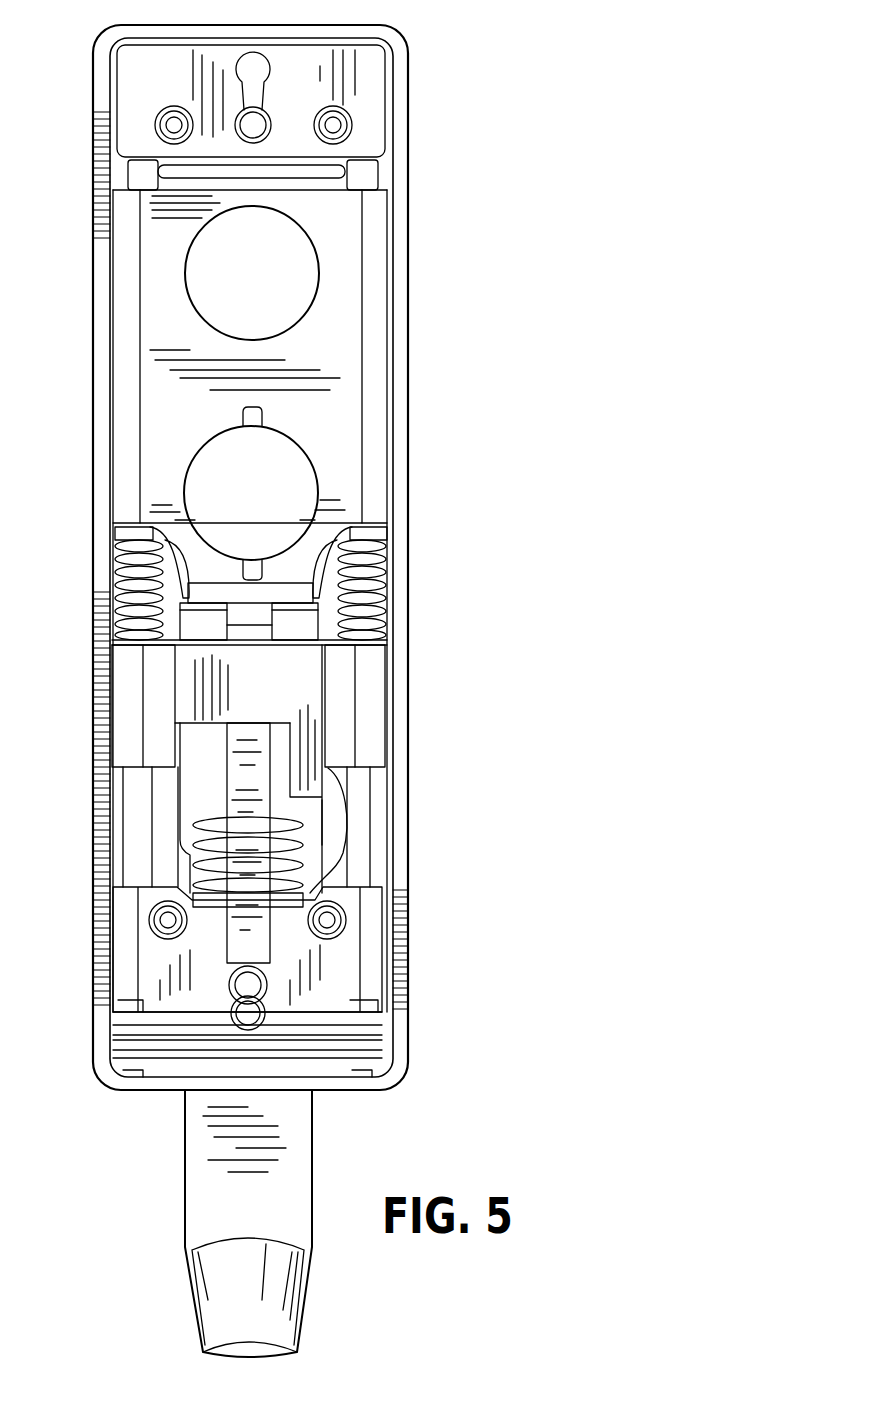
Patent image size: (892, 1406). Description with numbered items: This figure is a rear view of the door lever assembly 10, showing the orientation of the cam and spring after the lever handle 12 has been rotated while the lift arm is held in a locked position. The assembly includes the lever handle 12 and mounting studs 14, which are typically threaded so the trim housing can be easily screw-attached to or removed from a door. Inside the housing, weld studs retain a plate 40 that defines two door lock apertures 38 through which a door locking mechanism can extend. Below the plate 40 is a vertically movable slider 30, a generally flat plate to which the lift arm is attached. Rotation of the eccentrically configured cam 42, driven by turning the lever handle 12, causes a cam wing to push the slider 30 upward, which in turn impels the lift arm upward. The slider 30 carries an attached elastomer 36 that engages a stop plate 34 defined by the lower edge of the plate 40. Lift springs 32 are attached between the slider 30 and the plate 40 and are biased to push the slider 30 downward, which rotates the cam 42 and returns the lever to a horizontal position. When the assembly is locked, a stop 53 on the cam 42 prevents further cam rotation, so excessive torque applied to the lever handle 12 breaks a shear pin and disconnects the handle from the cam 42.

The door lever assembly 10 is at (628, 33).
The lever handle 12 is at (408, 33).
The mounting studs 14 is at (158, 112).
The slider 30 is at (365, 705).
The lift springs 32 is at (113, 572).
The stop plate 34 is at (277, 592).
The elastomer 36 is at (213, 625).
The door lock apertures 38 is at (295, 438).
The plate 40 is at (352, 447).
The cam 42 is at (335, 845).
The stop 53 is at (328, 772).